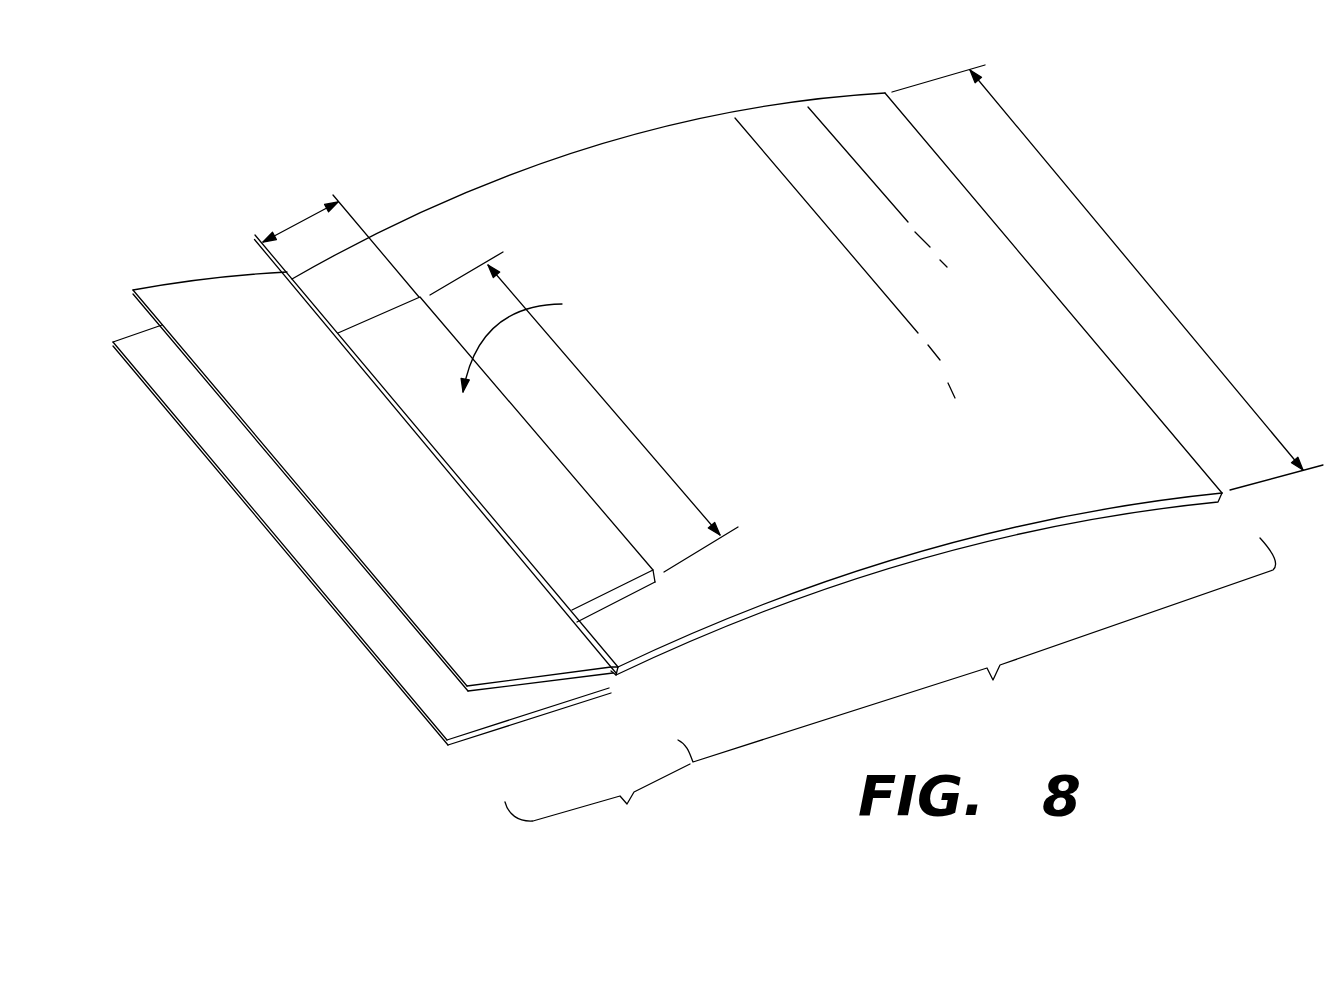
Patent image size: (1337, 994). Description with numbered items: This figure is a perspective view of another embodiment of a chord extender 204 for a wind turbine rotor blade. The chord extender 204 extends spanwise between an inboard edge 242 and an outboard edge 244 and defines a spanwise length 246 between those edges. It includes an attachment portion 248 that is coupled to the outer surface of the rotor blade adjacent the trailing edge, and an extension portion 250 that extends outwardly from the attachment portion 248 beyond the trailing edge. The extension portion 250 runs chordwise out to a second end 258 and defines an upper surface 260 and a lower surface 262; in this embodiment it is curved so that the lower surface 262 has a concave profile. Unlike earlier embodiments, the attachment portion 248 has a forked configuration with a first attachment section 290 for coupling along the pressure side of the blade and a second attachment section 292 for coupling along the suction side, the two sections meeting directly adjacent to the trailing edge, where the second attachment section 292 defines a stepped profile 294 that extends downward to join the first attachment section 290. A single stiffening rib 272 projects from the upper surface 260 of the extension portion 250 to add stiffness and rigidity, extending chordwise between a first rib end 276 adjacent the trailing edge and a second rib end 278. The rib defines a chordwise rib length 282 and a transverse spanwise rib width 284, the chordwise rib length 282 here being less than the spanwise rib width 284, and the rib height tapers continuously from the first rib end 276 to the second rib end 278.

The chord extender 204 is at (373, 148).
The inboard edge 242 is at (885, 567).
The outboard edge 244 is at (583, 150).
The spanwise length 246 is at (1065, 185).
The attachment portion 248 is at (597, 802).
The extension portion 250 is at (977, 650).
The second end 258 is at (1060, 305).
The upper surface 260 is at (965, 508).
The lower surface 262 is at (1060, 523).
The stiffening rib 272 is at (539, 341).
The first rib end 276 is at (548, 578).
The second rib end 278 is at (577, 482).
The chordwise rib length 282 is at (303, 220).
The spanwise rib width 284 is at (582, 373).
The first attachment section 290 is at (350, 588).
The second attachment section 292 is at (217, 281).
The stepped profile 294 is at (617, 673).